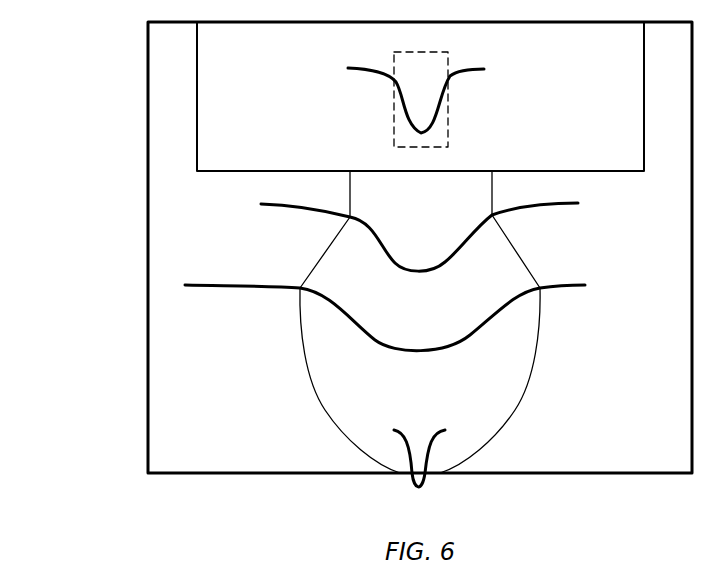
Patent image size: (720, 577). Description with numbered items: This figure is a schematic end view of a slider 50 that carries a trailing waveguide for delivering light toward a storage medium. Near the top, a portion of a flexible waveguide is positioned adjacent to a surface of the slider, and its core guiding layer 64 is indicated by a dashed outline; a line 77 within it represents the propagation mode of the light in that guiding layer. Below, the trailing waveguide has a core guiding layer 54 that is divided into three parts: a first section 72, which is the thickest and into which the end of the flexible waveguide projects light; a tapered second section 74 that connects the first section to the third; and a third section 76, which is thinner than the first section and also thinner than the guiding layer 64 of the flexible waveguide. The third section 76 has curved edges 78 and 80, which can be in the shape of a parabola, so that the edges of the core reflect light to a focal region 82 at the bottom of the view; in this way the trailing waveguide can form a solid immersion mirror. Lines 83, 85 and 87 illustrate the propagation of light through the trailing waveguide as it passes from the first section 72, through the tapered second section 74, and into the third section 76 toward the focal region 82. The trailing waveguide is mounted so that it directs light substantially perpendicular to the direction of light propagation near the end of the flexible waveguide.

The slider 50 is at (108, 303).
The core guiding layer 64 is at (448, 62).
The line representing propagation mode 77 is at (430, 128).
The first section 72 is at (480, 193).
The line illustrating propagation of light 83 is at (378, 250).
The second section 74 is at (505, 265).
The line illustrating propagation of light 85 is at (363, 330).
The core guiding layer 54 is at (433, 398).
The curved edge 80 is at (322, 405).
The curved edge 78 is at (513, 412).
The third section 76 is at (515, 371).
The focal region 82 is at (428, 488).
The line illustrating propagation of light 87 is at (405, 452).